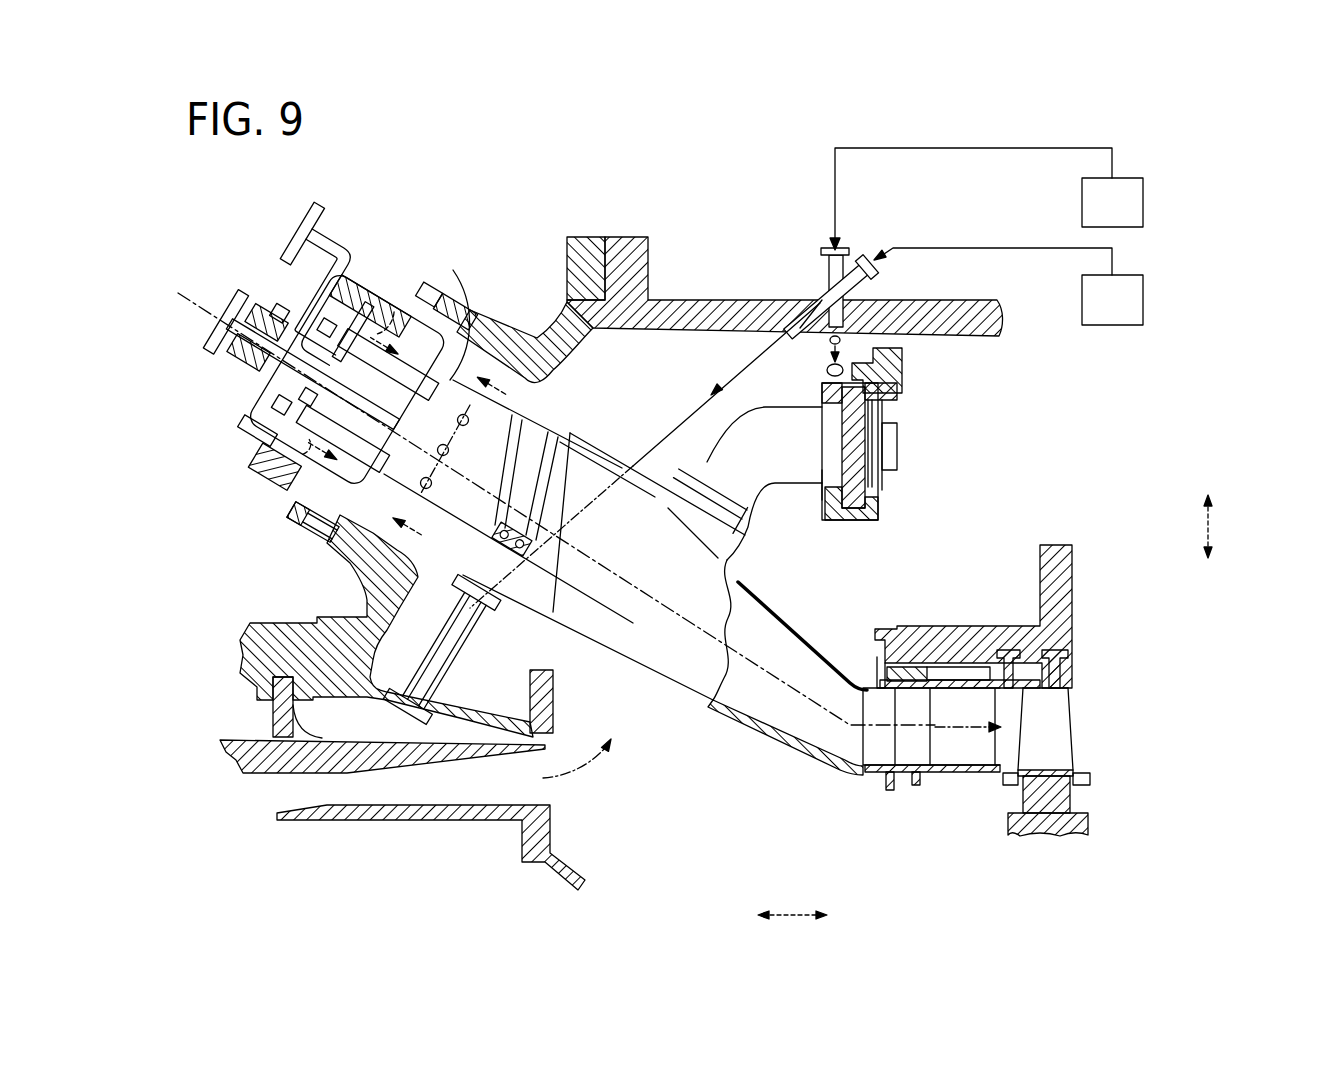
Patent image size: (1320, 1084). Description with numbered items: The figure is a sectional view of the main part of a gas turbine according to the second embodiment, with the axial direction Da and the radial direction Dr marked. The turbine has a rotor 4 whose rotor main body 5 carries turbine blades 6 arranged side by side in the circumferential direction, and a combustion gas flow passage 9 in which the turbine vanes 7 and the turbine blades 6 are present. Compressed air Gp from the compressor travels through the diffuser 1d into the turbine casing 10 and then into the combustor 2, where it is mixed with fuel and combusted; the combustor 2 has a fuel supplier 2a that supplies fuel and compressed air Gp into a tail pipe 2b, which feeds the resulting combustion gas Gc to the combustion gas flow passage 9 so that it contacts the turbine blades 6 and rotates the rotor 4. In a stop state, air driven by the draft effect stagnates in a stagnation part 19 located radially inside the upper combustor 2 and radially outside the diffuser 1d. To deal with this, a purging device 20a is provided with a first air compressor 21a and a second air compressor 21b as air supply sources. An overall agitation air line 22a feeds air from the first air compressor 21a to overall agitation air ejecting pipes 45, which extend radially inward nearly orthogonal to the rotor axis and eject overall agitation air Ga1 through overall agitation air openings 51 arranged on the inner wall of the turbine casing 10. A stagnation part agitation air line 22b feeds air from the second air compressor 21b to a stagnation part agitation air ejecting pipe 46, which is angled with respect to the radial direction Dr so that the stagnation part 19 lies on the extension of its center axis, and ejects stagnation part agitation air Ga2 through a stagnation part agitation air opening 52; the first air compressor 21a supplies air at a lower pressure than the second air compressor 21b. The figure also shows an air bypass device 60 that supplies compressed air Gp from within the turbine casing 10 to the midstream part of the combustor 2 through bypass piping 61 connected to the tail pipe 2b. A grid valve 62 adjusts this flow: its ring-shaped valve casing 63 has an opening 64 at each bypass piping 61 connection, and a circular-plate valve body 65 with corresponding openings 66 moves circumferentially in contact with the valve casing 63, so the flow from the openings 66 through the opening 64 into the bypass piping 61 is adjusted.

The combustor 2 is at (703, 708).
The fuel supplier 2a is at (455, 382).
The tail pipe 2b is at (770, 735).
The rotor 4 is at (1098, 762).
The rotor main body 5 is at (1081, 822).
The turbine blades 6 is at (1060, 750).
The turbine vanes 7 is at (965, 745).
The combustion gas flow passage 9 is at (1012, 718).
The turbine casing 10 is at (585, 240).
The stagnation part 19 is at (367, 583).
The diffuser 1d is at (560, 732).
The purging device 20a is at (823, 176).
The first air compressor 21a is at (1134, 178).
The second air compressor 21b is at (1134, 275).
The overall agitation air line 22a is at (975, 148).
The stagnation part agitation air line 22b is at (975, 248).
The overall agitation air ejecting pipe 45 is at (828, 262).
The stagnation part agitation air ejecting pipe 46 is at (818, 298).
The overall agitation air opening 51 is at (848, 333).
The stagnation part agitation air opening 52 is at (802, 336).
The air bypass device 60 is at (919, 500).
The bypass piping 61 is at (773, 515).
The grid valve 62 is at (919, 474).
The valve casing 63 is at (875, 510).
The opening 64 is at (838, 482).
The valve body 65 is at (857, 452).
The openings 66 is at (857, 409).
The compressed air Gp is at (575, 778).
The overall agitation air Ga1 is at (848, 342).
The stagnation part agitation air Ga2 is at (752, 360).
The combustion gas Gc is at (973, 720).
The radial direction Dr is at (1224, 526).
The axial direction Da is at (792, 904).